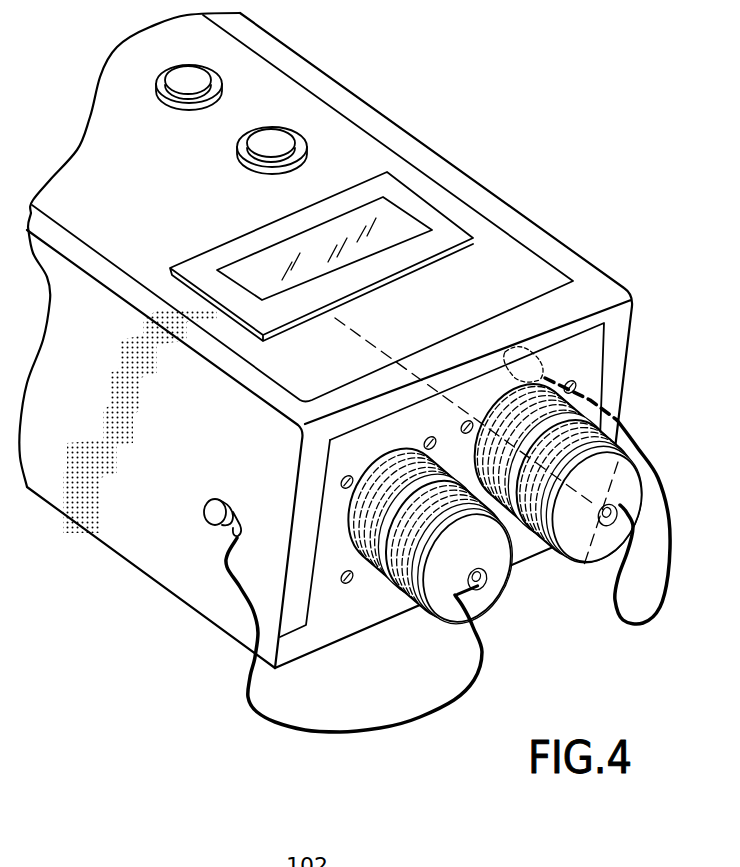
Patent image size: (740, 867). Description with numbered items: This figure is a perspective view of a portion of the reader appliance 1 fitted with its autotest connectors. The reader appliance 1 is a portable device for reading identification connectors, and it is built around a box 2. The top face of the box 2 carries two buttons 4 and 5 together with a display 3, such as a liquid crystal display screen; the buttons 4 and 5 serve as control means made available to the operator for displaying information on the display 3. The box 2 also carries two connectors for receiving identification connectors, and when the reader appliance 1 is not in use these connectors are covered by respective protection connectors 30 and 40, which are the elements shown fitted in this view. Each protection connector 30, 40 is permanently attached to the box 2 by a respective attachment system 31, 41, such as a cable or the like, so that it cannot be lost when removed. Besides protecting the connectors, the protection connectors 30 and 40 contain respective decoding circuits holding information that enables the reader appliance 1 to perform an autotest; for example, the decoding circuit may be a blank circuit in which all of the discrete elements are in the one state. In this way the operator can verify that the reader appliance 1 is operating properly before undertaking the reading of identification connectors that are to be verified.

The reader appliance 1 is at (405, 77).
The box 2 is at (146, 563).
The display 3 is at (250, 268).
The button 4 is at (190, 74).
The button 5 is at (270, 137).
The protection connector 30 is at (503, 592).
The attachment system 31 is at (340, 734).
The protection connector 40 is at (573, 575).
The attachment system 41 is at (676, 589).